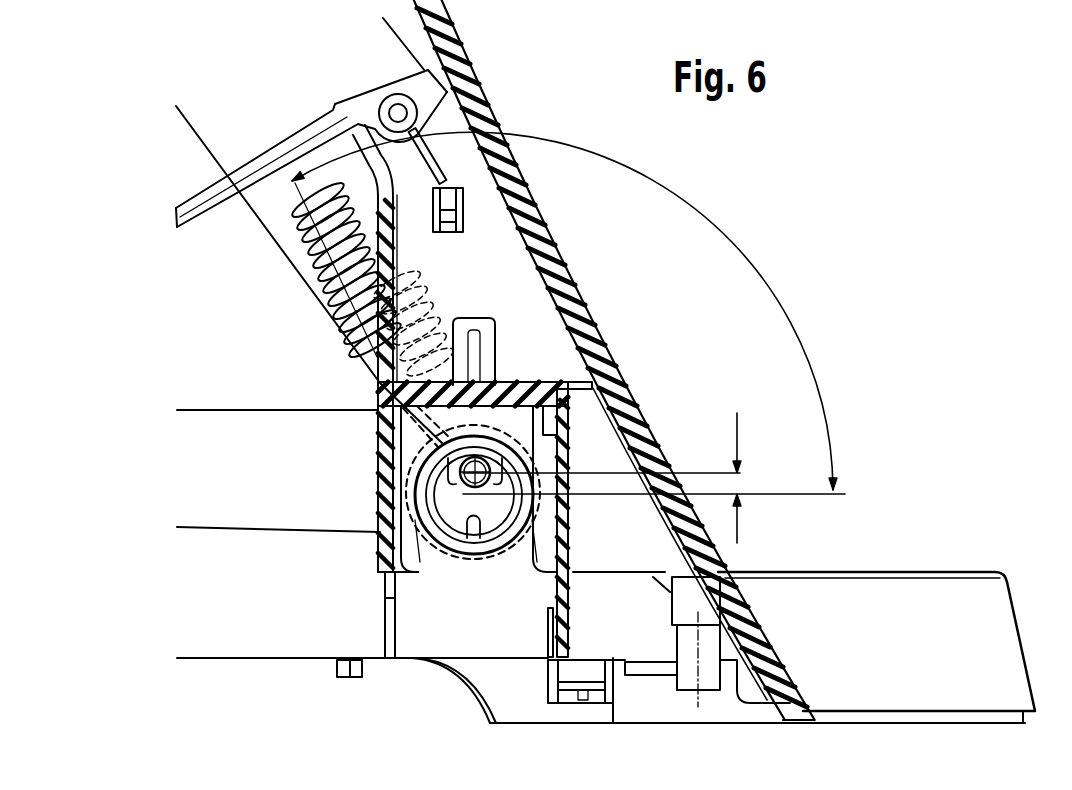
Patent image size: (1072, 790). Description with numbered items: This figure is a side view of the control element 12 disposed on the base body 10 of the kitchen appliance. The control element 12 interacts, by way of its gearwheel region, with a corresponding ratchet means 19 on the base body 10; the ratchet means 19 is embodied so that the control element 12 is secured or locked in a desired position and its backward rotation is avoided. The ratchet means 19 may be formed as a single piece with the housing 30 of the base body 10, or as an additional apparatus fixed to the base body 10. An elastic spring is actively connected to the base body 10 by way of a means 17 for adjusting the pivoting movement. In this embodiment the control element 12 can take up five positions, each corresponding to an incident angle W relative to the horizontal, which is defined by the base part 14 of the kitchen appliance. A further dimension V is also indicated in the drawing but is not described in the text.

The base body 10 is at (510, 66).
The control element 12 is at (452, 558).
The base part 14 is at (912, 588).
The means for adjusting the pivoting movement 17 is at (372, 478).
The ratchet means 19 is at (541, 500).
The housing 30 is at (576, 293).
The incident angle W is at (713, 222).
The vertical offset V is at (737, 485).